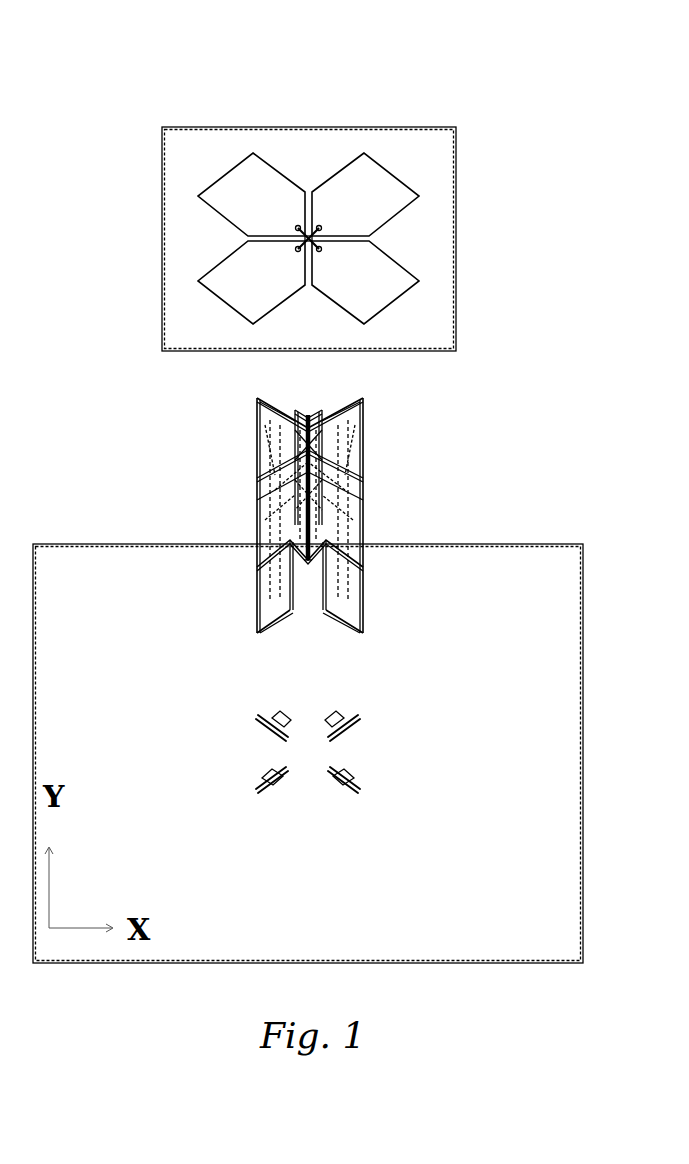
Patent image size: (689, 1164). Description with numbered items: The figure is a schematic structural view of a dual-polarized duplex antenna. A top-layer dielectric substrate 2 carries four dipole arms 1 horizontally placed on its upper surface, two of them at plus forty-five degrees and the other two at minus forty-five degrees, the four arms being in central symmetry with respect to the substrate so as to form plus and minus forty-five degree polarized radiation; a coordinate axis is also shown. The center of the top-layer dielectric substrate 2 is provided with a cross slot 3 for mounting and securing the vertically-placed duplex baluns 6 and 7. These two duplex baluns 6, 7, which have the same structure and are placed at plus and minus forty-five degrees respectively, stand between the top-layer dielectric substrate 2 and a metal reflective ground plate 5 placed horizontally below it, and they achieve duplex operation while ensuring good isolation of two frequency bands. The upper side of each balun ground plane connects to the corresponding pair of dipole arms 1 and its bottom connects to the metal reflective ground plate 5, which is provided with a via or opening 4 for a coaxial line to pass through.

The dipole arm 1 is at (240, 195).
The top-layer dielectric substrate 2 is at (422, 162).
The cross slot 3 is at (304, 238).
The via or opening 4 is at (260, 715).
The metal reflective ground plate 5 is at (408, 700).
The duplex balun 6 is at (363, 398).
The duplex balun 7 is at (363, 476).